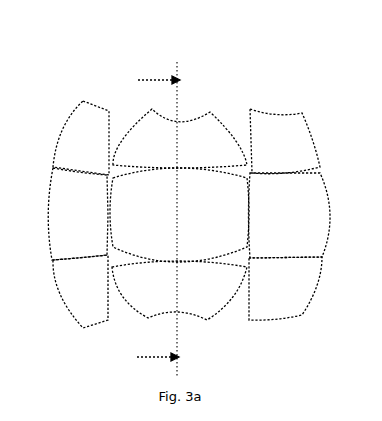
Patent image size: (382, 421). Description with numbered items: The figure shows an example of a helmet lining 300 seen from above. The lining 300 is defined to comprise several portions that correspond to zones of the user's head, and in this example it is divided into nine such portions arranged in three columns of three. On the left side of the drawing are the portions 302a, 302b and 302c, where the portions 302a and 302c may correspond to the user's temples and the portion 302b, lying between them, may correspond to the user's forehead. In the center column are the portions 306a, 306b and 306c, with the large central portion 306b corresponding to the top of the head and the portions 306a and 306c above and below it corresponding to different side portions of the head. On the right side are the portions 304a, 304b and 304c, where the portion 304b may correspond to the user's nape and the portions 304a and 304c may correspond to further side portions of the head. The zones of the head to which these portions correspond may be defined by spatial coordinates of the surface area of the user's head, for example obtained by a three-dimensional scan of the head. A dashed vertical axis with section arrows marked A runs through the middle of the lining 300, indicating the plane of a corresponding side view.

The lining 300 is at (171, 37).
The portion 302a is at (67, 154).
The portion 302b is at (60, 222).
The portion 302c is at (67, 297).
The portion 304a is at (265, 149).
The portion 304b is at (272, 225).
The portion 304c is at (263, 295).
The portion 306a is at (165, 154).
The portion 306b is at (165, 220).
The portion 306c is at (163, 297).